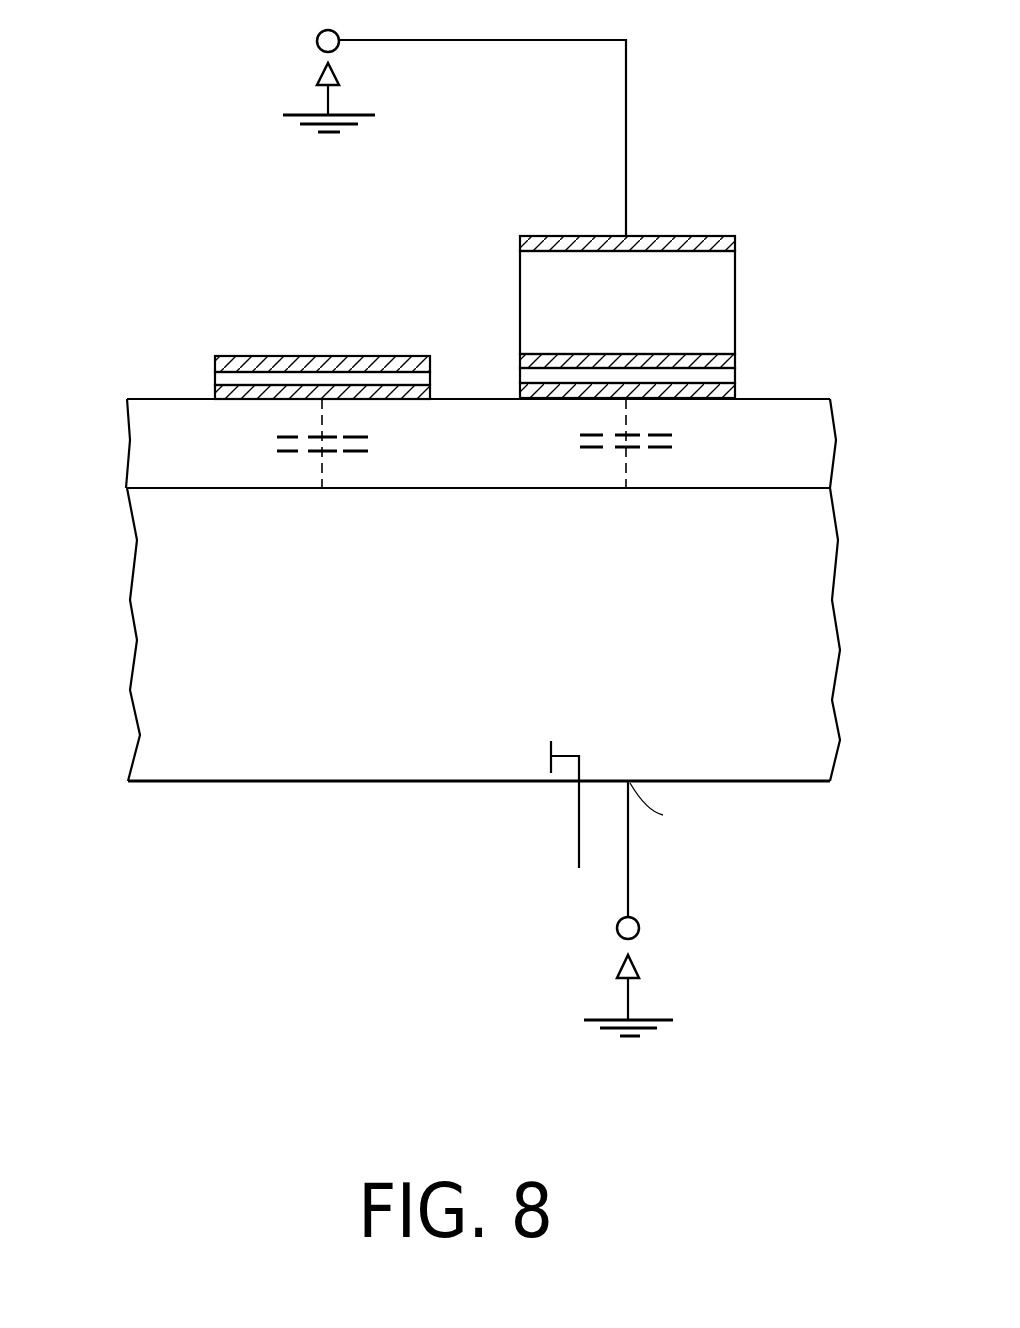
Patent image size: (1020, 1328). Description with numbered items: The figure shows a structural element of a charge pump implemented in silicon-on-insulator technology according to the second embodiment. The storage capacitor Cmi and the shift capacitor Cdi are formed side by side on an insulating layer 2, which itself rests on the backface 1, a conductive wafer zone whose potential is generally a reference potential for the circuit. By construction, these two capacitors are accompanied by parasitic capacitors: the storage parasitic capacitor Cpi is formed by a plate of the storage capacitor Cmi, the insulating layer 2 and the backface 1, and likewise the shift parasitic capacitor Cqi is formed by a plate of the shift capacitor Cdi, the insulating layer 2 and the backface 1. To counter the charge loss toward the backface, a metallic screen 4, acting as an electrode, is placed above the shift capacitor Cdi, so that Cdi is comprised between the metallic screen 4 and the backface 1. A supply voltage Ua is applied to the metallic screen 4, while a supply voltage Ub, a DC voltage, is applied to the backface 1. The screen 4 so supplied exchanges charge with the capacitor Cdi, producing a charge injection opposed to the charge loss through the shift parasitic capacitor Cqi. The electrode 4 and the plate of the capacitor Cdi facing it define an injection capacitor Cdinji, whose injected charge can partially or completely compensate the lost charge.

The backface 1 is at (157, 658).
The insulating layer 2 is at (150, 408).
The metallic screen 4 is at (688, 236).
The storage capacitor Cmi is at (215, 372).
The injection capacitor Cdinji is at (735, 283).
The shift capacitor Cdi is at (735, 377).
The storage parasitic capacitor Cpi is at (278, 441).
The shift parasitic capacitor Cqi is at (672, 440).
The supply voltage Ua is at (446, 133).
The supply voltage Ub is at (642, 908).